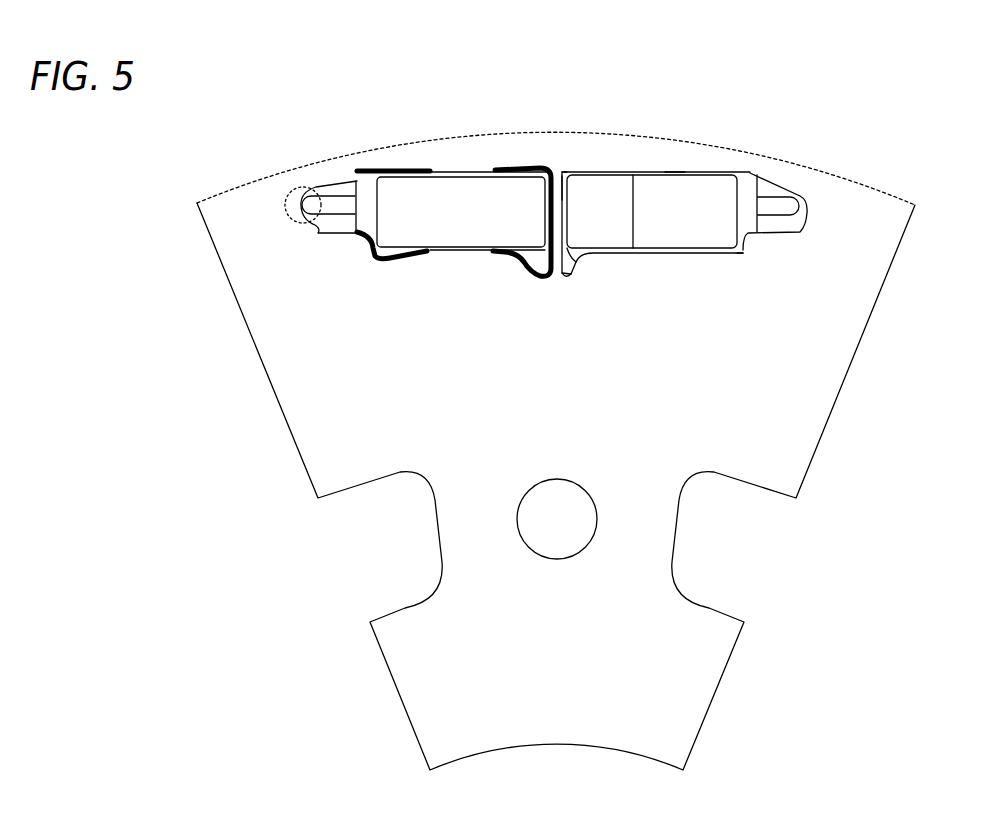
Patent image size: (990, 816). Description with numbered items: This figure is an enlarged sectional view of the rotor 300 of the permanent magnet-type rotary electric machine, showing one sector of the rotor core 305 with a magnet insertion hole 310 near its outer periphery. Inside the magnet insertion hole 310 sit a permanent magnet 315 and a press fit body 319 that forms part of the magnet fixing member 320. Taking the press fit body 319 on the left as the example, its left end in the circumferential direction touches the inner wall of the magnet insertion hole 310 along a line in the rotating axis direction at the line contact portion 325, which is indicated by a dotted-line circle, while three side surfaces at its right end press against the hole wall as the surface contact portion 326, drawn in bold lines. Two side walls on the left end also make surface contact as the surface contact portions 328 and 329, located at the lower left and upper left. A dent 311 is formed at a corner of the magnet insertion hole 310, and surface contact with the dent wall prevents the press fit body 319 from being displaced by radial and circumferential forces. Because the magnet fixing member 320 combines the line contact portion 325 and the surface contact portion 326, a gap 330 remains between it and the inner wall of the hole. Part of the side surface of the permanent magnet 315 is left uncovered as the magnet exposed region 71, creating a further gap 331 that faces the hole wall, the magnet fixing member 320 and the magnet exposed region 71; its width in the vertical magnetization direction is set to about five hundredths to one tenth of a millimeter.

The rotor 300 is at (905, 177).
The stator core piece 305 is at (817, 390).
The magnet insertion hole 310 is at (710, 171).
The dent 311 is at (572, 169).
The permanent magnet 315 is at (607, 207).
The press fit body 319 is at (463, 196).
The magnet fixing member 320 is at (748, 218).
The line contact portion 325 is at (290, 192).
The surface contact portion 326 is at (530, 273).
The surface contact portion 328 is at (372, 260).
The surface contact portion 329 is at (392, 168).
The gap 330 is at (783, 190).
The gap 331 is at (660, 172).
The magnet exposed region 71 is at (673, 173).